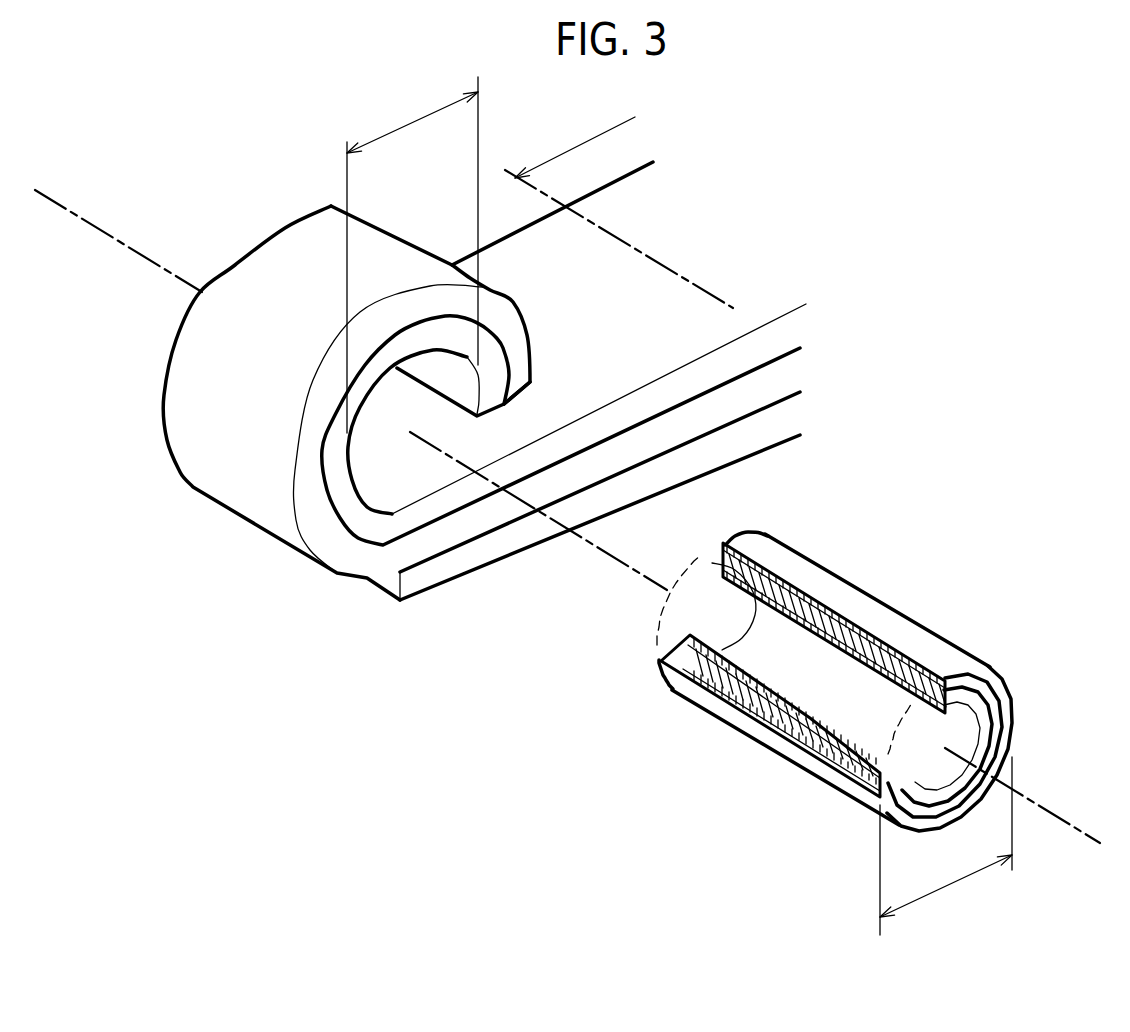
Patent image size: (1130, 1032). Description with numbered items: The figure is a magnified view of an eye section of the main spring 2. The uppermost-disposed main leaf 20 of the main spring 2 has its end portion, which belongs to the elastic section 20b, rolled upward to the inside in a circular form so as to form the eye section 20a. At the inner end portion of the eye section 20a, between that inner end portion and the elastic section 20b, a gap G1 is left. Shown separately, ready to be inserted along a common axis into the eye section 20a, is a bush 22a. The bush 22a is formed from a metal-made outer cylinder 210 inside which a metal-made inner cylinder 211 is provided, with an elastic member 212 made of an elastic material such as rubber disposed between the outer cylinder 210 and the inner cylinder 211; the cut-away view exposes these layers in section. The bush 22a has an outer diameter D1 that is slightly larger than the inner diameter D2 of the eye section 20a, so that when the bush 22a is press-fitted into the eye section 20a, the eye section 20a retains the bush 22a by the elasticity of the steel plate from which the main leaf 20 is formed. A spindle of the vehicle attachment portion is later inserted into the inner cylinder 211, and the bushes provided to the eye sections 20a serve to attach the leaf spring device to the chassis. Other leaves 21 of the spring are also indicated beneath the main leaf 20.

The main spring 2 is at (300, 170).
The main leaf 20 is at (437, 510).
The eye section 20a is at (350, 519).
The elastic section 20b is at (587, 142).
The inner layer 21 is at (482, 520).
The gap G1 is at (458, 435).
The outer cylinder 210 is at (773, 538).
The inner cylinder 211 is at (724, 554).
The elastic member 212 is at (723, 545).
The bush 22a is at (1012, 698).
The outer diameter D1 is at (946, 846).
The inner diameter D2 is at (412, 255).